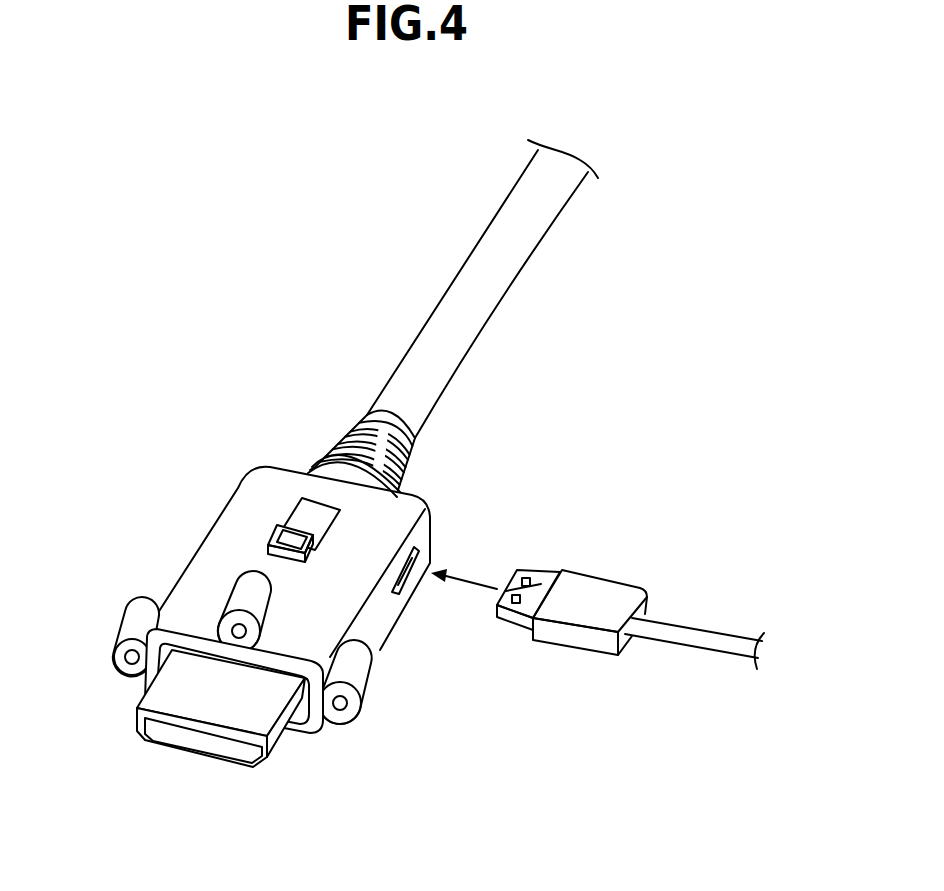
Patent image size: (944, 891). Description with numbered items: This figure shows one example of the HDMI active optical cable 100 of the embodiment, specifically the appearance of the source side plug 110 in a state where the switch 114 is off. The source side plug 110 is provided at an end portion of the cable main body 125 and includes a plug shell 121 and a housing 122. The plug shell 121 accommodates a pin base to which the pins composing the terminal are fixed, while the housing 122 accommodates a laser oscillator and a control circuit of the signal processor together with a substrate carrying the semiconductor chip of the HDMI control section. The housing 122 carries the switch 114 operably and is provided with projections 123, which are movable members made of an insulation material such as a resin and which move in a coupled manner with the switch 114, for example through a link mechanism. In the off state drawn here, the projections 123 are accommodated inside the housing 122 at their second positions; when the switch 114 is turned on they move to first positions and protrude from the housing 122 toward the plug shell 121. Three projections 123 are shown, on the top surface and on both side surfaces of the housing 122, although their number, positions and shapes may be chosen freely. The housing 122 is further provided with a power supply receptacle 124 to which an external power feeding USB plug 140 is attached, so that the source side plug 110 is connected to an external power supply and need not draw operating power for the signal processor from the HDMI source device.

The HDMI active optical cable 100 is at (355, 168).
The source side plug 110 is at (203, 530).
The switch 114 is at (277, 528).
The plug shell 121 is at (139, 699).
The housing 122 is at (207, 565).
The projections 123 is at (232, 628).
The power supply receptacle 124 is at (402, 582).
The cable main body 125 is at (518, 286).
The external power feeding USB plug 140 is at (603, 578).